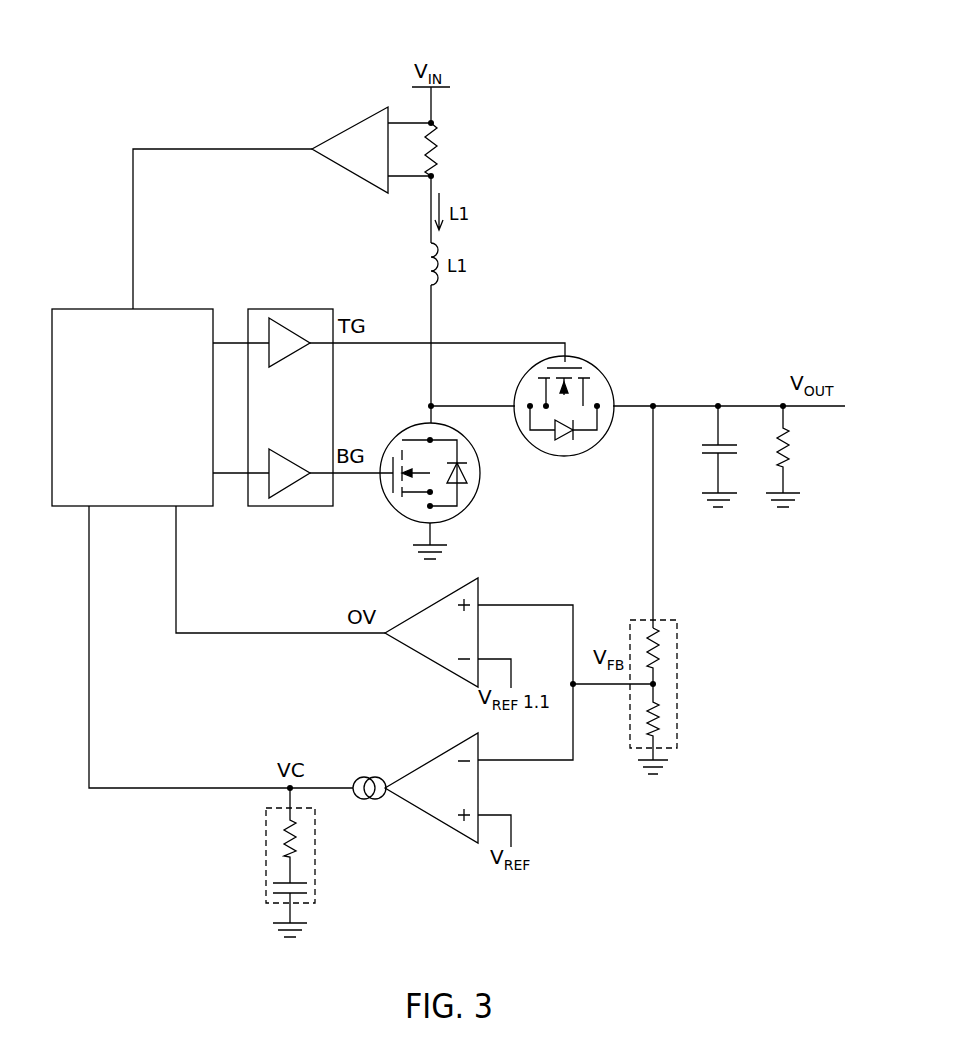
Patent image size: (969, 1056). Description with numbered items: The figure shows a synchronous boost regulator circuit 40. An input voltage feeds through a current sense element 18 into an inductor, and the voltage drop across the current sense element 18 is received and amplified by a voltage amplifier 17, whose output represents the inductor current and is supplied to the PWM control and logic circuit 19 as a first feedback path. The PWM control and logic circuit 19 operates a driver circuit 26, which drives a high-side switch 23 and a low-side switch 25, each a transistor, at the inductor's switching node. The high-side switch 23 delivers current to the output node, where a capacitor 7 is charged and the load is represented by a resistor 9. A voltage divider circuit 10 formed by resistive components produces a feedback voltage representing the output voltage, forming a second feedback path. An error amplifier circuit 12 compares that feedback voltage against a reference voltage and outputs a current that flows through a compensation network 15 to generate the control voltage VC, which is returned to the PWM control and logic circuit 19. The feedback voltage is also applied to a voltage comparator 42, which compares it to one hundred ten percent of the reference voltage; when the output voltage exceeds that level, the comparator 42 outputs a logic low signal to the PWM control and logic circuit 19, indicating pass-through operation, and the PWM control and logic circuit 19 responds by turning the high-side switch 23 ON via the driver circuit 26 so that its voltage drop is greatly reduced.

The boost regulator circuit 40 is at (720, 110).
The voltage amplifier 17 is at (352, 125).
The current sense element 18 is at (438, 155).
The PWM control and logic circuit 19 is at (155, 309).
The driver circuit 26 is at (290, 309).
The high-side switch 23 is at (610, 372).
The low-side switch 25 is at (480, 473).
The capacitor 7 is at (725, 452).
The resistor 9 is at (790, 453).
The voltage comparator 42 is at (432, 603).
The error amplifier circuit 12 is at (432, 758).
The voltage divider circuit 10 is at (677, 689).
The compensation network 15 is at (315, 857).